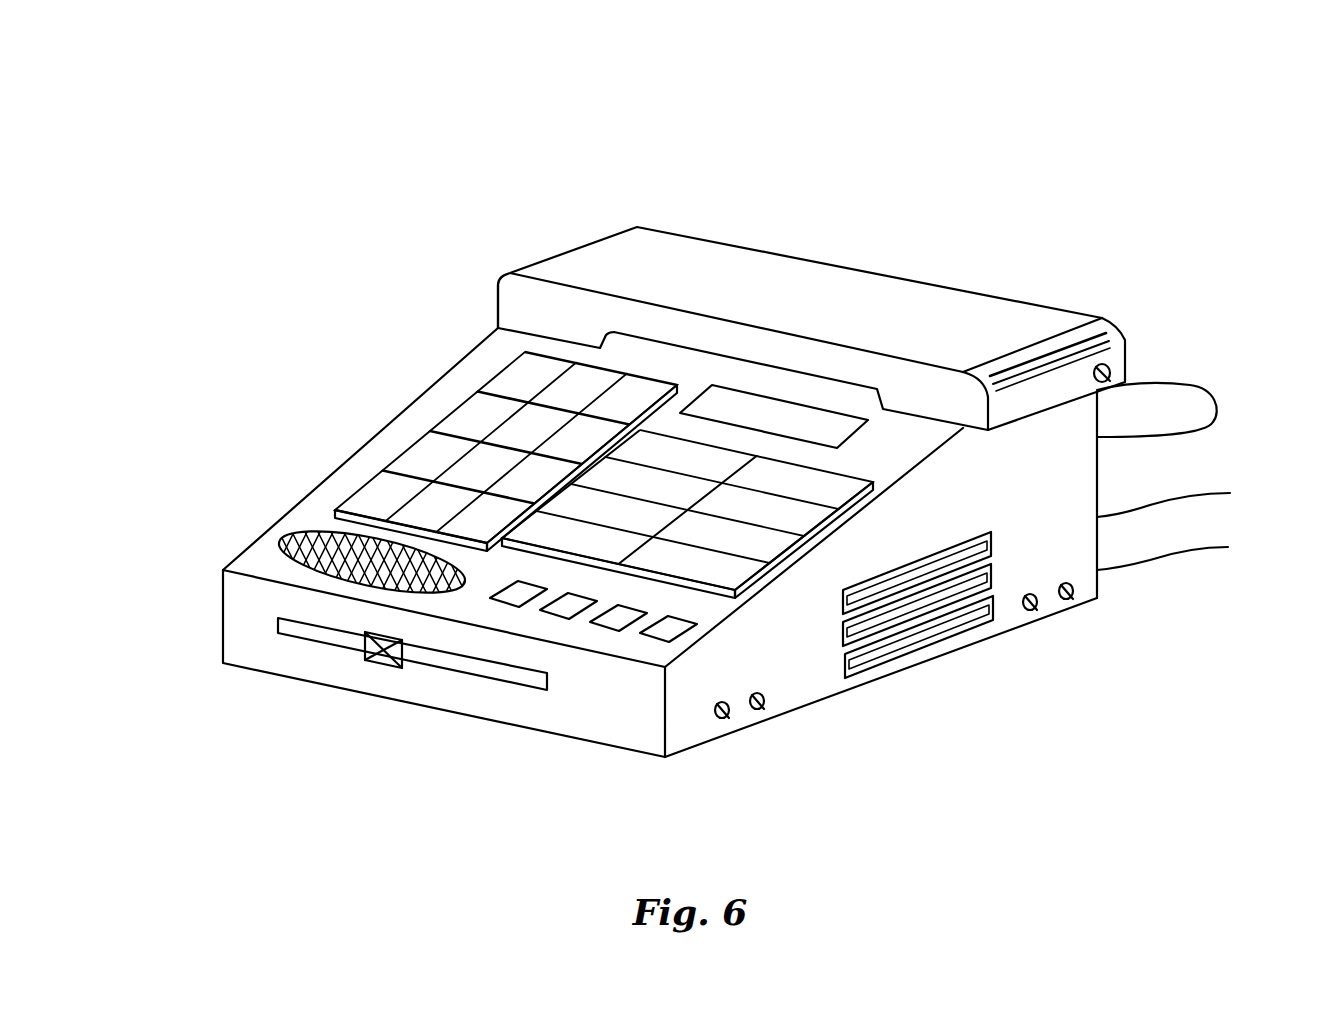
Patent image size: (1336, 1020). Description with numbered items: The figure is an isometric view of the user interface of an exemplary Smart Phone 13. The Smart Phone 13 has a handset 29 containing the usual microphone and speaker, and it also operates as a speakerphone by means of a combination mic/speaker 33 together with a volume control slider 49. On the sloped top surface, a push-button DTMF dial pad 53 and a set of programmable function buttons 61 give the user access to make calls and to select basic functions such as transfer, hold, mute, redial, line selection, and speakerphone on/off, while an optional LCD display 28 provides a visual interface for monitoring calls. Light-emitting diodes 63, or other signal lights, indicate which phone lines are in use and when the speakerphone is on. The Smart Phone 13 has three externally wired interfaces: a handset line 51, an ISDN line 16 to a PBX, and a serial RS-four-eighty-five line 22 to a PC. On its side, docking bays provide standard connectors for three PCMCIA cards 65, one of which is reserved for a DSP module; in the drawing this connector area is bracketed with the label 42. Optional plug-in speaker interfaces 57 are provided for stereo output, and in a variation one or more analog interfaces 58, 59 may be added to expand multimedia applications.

The Smart Phone 13 is at (478, 110).
The handset 29 is at (900, 290).
The handset line 51 is at (1193, 385).
The ISDN line 16 is at (1213, 493).
The RS-485 line 22 is at (1207, 547).
The push-button DTMF dial pad 53 is at (467, 395).
The LCD display 28 is at (727, 400).
The programmable function buttons 61 is at (850, 470).
The combination mic/speaker 33 is at (300, 533).
The volume control slider 49 is at (357, 643).
The light-emitting diodes 63 is at (583, 608).
The connector panel 42 is at (876, 629).
The PCMCIA cards 65 is at (870, 594).
The plug-in speaker interfaces 57 is at (1033, 606).
The analog interface 58 is at (724, 717).
The analog interface 59 is at (878, 737).